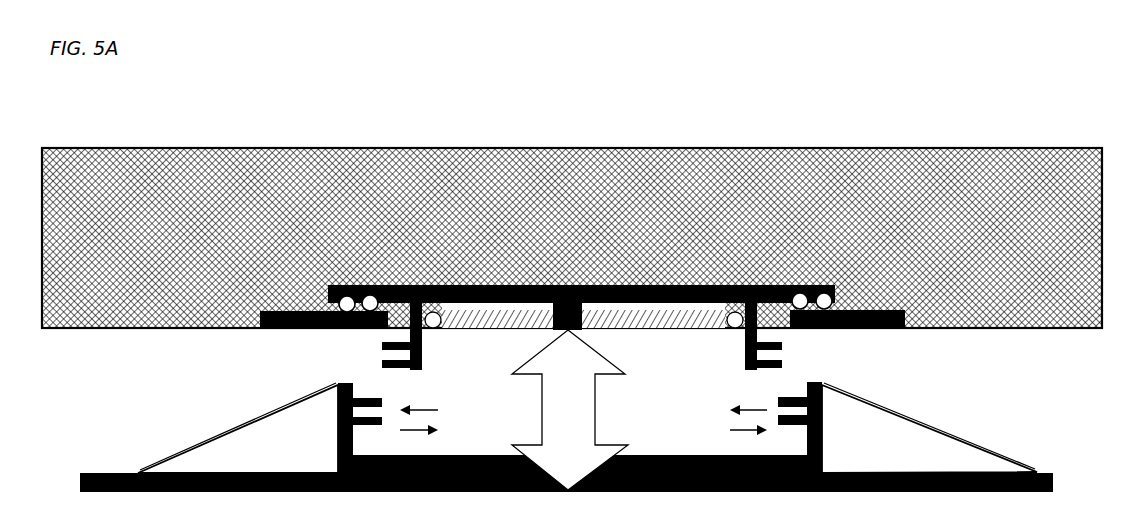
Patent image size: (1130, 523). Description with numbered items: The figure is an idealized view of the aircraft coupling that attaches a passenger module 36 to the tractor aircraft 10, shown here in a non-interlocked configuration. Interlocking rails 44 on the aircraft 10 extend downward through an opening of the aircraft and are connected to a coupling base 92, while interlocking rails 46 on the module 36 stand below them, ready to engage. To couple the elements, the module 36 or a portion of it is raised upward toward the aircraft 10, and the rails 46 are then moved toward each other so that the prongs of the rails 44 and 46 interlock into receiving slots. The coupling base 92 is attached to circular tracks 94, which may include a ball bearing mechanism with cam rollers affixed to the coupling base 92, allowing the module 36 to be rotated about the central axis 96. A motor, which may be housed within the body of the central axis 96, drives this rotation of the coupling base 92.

The aircraft 10 is at (184, 148).
The module 36 is at (933, 428).
The interlocking rails 44 is at (423, 356).
The interlocking rails 46 is at (363, 397).
The coupling base 92 is at (556, 286).
The circular tracks 94 is at (338, 307).
The central axis 96 is at (567, 331).